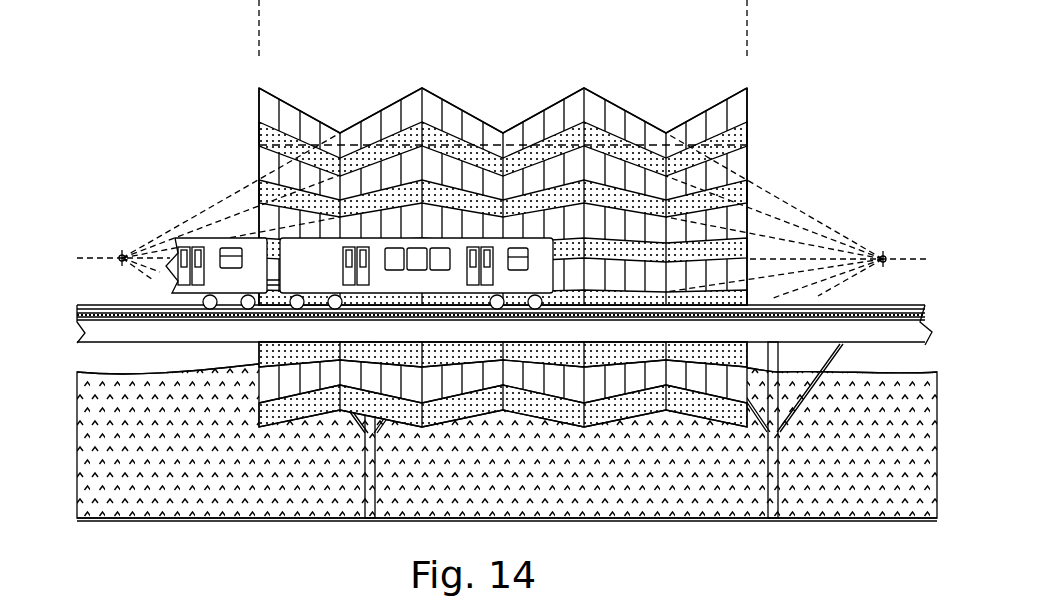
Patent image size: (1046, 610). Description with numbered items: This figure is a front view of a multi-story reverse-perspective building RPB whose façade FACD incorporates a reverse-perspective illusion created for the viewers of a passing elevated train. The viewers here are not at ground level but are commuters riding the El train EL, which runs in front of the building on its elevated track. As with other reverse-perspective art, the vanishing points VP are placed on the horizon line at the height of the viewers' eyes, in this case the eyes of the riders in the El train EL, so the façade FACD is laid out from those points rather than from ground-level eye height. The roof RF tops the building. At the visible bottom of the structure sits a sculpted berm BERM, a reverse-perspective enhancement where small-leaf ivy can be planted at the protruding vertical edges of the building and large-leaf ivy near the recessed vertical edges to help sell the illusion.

The reverse-perspective building RPB is at (480, 213).
The façade FACD is at (265, 108).
The El train EL is at (228, 237).
The vanishing point VP is at (118, 250).
The roof RF is at (737, 143).
The berm BERM is at (270, 500).